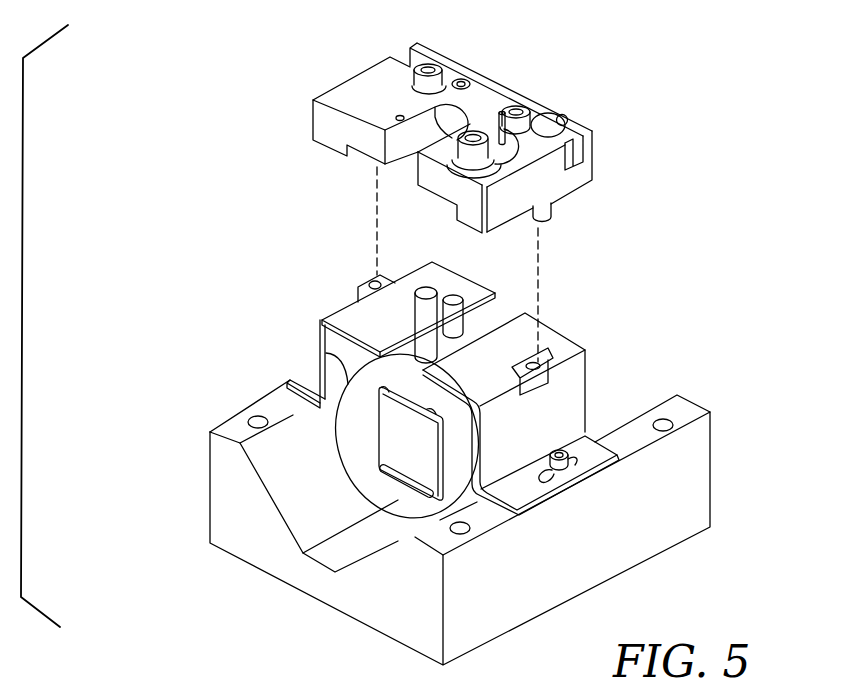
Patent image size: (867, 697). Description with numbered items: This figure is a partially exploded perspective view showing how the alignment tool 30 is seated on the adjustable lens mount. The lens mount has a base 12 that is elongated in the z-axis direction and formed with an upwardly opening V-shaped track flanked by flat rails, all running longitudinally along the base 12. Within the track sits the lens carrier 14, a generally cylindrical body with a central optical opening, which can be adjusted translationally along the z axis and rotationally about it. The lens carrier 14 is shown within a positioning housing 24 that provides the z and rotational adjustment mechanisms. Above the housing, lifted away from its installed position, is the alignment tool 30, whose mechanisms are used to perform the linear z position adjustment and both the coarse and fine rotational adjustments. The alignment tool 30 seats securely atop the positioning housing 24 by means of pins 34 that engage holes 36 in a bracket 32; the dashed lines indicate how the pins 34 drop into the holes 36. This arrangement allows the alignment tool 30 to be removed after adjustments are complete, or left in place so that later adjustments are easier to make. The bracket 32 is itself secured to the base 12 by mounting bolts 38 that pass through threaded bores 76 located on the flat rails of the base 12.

The base 12 is at (248, 567).
The lens carrier 14 is at (343, 363).
The positioning housing 24 is at (492, 129).
The alignment tool 30 is at (593, 153).
The bracket 32 is at (587, 392).
The pins 34 is at (551, 208).
The holes 36 is at (375, 281).
The mounting bolts 38 is at (567, 466).
The threaded bores 76 is at (667, 425).